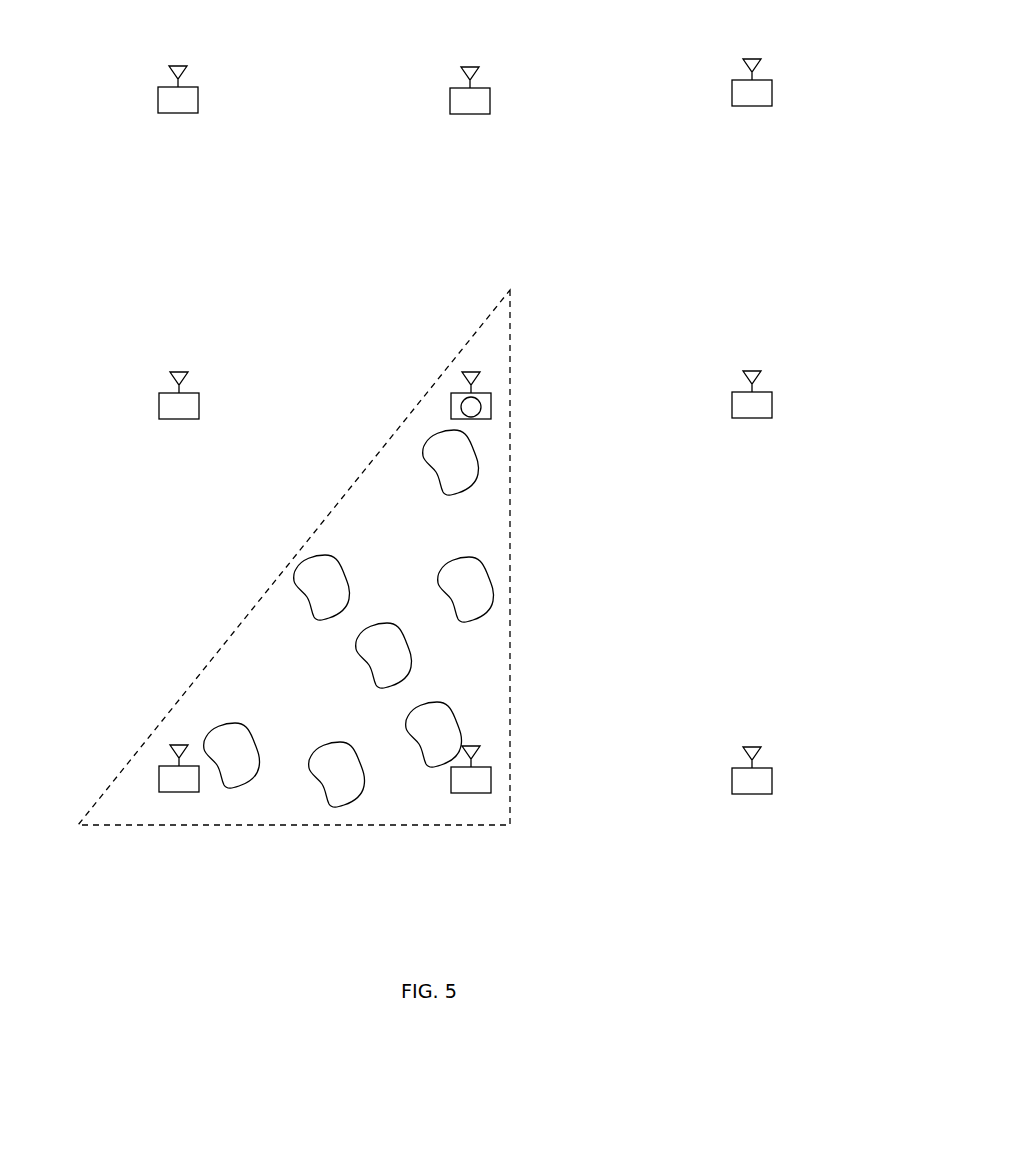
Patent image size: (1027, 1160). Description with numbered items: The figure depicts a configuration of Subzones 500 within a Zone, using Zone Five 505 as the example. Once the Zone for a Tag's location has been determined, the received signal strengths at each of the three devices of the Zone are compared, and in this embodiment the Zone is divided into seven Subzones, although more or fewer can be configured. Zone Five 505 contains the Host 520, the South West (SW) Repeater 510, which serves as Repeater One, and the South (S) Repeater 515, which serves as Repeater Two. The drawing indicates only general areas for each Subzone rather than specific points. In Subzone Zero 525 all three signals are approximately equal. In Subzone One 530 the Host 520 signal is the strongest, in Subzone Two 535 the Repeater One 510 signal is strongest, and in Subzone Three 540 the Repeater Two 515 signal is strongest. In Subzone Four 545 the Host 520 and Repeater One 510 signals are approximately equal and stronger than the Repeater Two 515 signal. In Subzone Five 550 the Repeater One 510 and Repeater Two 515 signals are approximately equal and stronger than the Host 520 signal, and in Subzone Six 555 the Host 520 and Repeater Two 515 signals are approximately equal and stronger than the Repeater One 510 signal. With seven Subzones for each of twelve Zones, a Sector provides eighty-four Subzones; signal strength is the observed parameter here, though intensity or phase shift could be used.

The Subzones 500 is at (64, 31).
The Zone 5 505 is at (480, 329).
The SW Repeater 510 is at (165, 792).
The S Repeater 515 is at (472, 792).
The Host 520 is at (491, 408).
The Subzone 0 525 is at (383, 623).
The Subzone 1 530 is at (478, 458).
The Subzone 2 535 is at (227, 727).
The Subzone 3 540 is at (450, 712).
The Subzone 4 545 is at (317, 557).
The Subzone 5 550 is at (340, 805).
The Subzone 6 555 is at (493, 584).